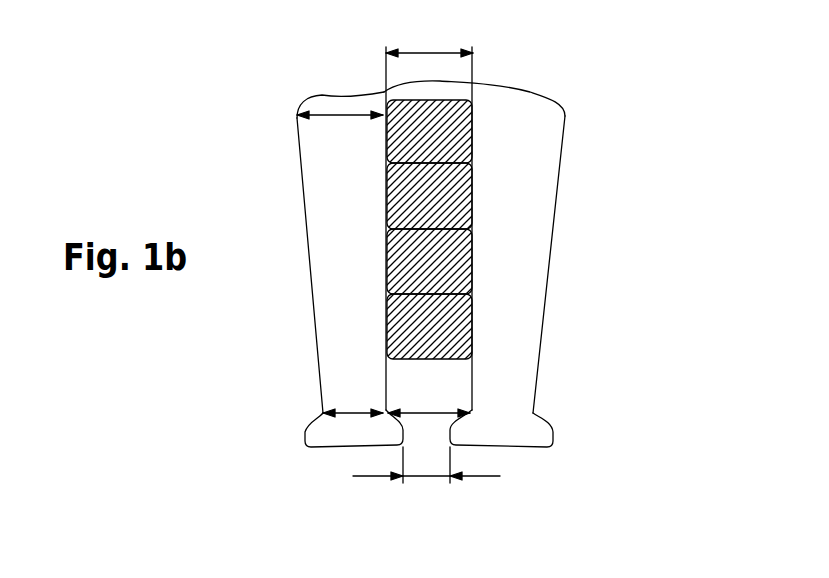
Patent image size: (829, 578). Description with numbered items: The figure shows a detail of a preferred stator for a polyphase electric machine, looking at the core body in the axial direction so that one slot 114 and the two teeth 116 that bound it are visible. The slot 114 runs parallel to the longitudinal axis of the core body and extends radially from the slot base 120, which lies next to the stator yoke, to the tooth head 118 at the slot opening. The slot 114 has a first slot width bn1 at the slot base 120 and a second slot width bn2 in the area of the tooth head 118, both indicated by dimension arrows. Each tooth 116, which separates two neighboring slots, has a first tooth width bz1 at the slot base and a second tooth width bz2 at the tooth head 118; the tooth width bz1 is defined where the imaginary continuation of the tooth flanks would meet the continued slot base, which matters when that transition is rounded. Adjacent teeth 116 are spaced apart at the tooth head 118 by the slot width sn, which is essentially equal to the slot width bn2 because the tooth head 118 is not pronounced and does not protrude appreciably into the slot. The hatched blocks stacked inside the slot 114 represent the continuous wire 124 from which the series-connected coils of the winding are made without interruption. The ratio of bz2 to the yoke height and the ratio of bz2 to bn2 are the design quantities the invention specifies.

The slot 114 is at (433, 373).
The tooth 116 is at (330, 213).
The tooth head 118 is at (519, 447).
The slot base 120 is at (513, 229).
The continuous wire 124 is at (433, 263).
The first slot width bn1 is at (431, 52).
The first tooth width bz1 is at (340, 114).
The second tooth width bz2 is at (353, 411).
The second slot width bn2 is at (430, 412).
The slot width sn is at (428, 480).